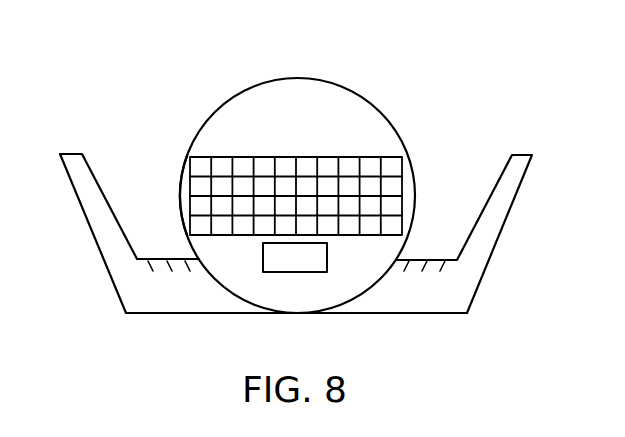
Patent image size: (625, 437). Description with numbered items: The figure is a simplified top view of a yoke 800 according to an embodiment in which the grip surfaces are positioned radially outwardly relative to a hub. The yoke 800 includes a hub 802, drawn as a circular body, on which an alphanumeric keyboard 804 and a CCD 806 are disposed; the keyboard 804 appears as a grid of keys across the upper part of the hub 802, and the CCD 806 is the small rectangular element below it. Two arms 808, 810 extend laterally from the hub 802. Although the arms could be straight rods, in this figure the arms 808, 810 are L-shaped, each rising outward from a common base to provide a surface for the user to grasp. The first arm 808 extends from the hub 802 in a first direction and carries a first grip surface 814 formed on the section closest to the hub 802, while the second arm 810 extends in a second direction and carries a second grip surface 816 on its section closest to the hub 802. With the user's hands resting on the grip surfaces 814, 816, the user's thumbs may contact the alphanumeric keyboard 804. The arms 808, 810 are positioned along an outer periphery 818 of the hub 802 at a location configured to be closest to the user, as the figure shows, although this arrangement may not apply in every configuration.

The yoke 800 is at (392, 71).
The hub 802 is at (340, 86).
The alphanumeric keyboard 804 is at (372, 157).
The CCD 806 is at (298, 272).
The first arm 808 is at (107, 272).
The second arm 810 is at (471, 296).
The first grip surface 814 is at (165, 258).
The second grip surface 816 is at (428, 258).
The outer periphery 818 is at (182, 172).